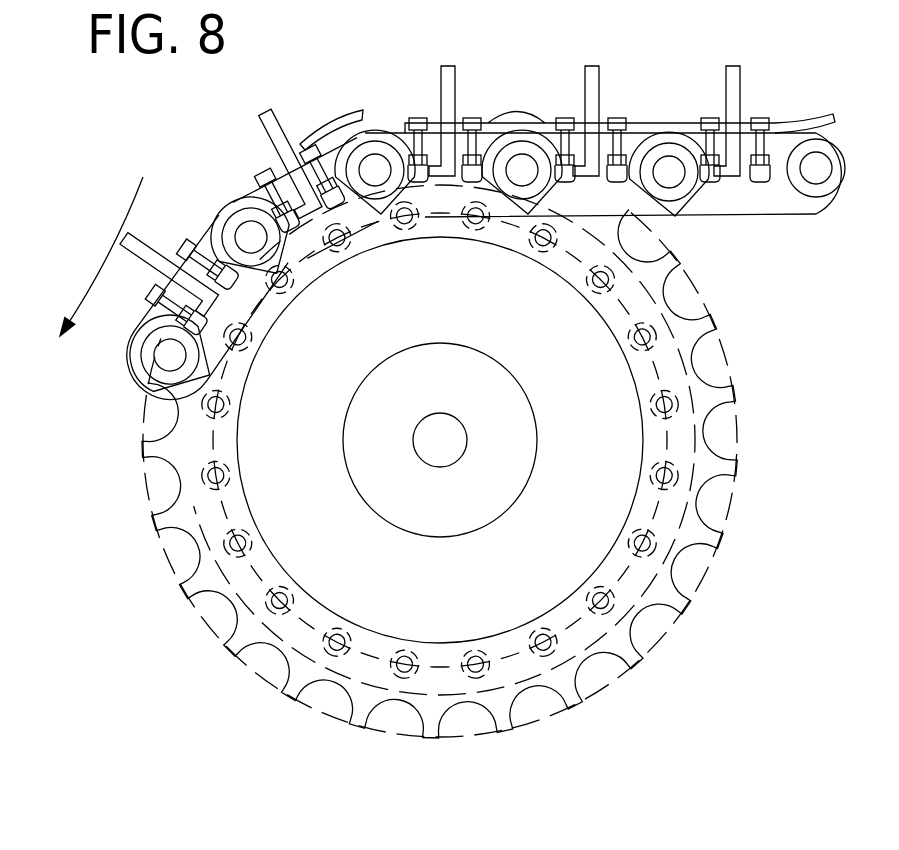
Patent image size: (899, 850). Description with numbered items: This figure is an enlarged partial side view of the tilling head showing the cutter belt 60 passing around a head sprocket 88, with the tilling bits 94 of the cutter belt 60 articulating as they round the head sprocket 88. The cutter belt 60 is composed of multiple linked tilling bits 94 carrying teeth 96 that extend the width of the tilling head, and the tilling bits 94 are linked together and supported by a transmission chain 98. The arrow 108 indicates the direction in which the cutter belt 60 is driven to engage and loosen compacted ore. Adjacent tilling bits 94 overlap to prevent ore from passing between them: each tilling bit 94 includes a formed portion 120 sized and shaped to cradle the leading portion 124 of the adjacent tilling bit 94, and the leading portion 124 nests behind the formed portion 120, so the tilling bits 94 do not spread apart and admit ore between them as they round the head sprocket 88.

The cutter belt 60 is at (477, 219).
The head sprocket 88 is at (723, 447).
The tilling bit 94 is at (688, 122).
The teeth 96 is at (585, 85).
The transmission chain 98 is at (742, 200).
The arrow indicating belt drive direction 108 is at (92, 252).
The formed portion 120 is at (348, 123).
The leading portion 124 is at (375, 123).